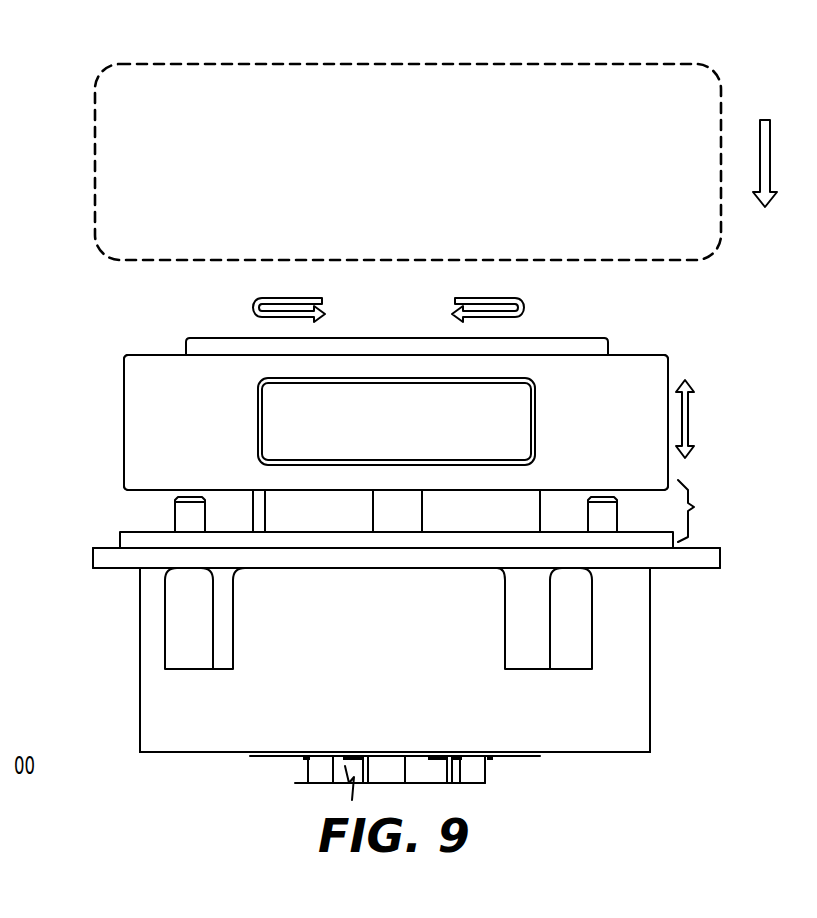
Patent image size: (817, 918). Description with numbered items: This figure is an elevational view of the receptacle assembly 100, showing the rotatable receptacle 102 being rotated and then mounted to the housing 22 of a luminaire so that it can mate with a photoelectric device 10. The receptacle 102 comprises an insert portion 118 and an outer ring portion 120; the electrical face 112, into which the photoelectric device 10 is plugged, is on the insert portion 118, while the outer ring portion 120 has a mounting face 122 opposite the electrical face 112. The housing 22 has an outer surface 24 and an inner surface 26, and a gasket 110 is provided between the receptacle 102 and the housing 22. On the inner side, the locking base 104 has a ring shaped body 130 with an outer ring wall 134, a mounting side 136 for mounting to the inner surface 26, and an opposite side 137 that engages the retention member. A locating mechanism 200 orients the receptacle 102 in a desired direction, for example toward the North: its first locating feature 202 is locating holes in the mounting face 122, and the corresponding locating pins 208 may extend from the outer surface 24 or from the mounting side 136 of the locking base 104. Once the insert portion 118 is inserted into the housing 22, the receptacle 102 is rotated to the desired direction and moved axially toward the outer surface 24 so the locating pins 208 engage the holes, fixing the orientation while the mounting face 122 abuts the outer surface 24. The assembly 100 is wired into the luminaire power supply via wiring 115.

The photoelectric device 10 is at (700, 110).
The receptacle assembly 100 is at (735, 352).
The rotatable receptacle 102 is at (106, 410).
The locking base 104 is at (628, 716).
The gasket 110 is at (333, 533).
The electrical face 112 is at (579, 326).
The wiring 115 is at (475, 775).
The insert portion 118 is at (490, 512).
The outer ring portion 120 is at (153, 363).
The mounting face 122 is at (147, 490).
The ring shaped body 130 is at (628, 755).
The outer ring wall 134 is at (175, 732).
The mounting side 136 is at (148, 570).
The opposite side 137 is at (228, 752).
The locating mechanism 200 is at (694, 507).
The first locating feature 202 is at (325, 660).
The locating pins 208 is at (188, 513).
The housing 22 is at (732, 556).
The outer surface 24 is at (699, 547).
The inner surface 26 is at (700, 569).